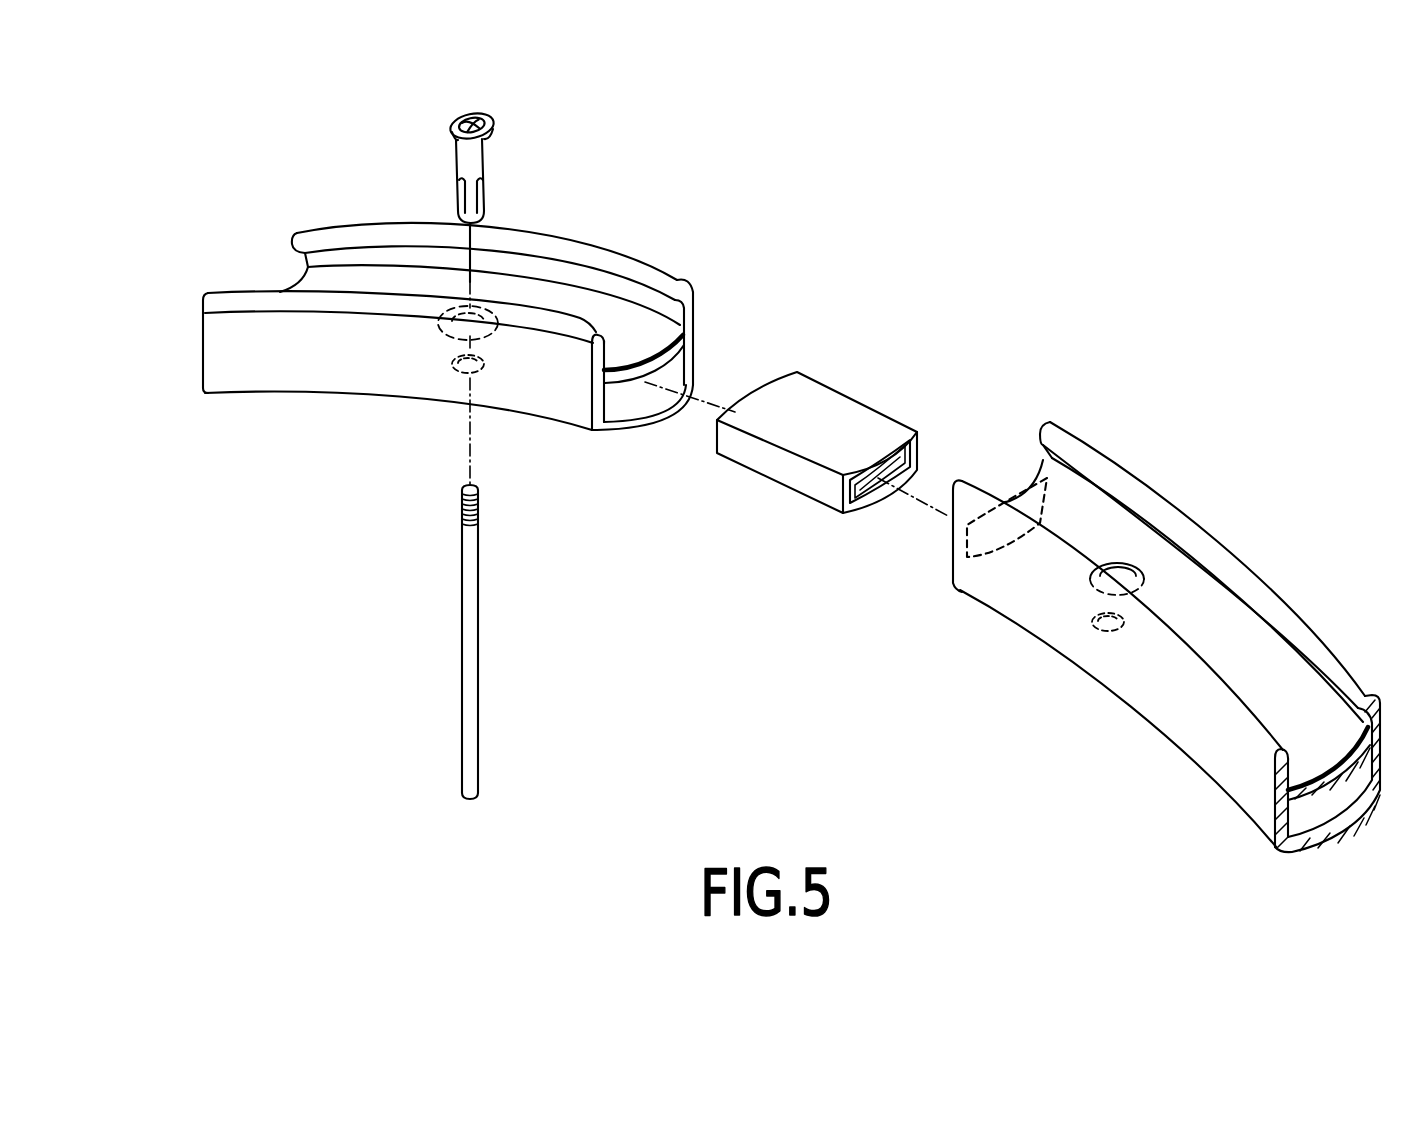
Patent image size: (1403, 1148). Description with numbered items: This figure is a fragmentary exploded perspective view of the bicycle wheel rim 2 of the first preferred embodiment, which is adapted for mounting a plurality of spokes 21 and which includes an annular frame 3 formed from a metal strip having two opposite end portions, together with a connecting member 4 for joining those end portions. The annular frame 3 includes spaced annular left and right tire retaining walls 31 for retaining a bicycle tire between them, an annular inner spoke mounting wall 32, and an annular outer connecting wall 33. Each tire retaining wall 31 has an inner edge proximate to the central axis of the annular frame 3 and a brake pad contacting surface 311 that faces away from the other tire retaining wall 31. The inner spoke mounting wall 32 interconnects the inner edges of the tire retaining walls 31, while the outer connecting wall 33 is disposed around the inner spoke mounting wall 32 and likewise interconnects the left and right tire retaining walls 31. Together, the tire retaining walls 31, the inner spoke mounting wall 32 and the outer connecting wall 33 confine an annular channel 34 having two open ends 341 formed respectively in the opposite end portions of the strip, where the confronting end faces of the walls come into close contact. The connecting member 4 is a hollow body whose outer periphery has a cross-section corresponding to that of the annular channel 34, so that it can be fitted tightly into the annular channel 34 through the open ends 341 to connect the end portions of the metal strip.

The bicycle wheel rim 2 is at (836, 266).
The spoke 21 is at (467, 603).
The annular frame 3 is at (577, 244).
The tire retaining wall 31 is at (697, 350).
The brake pad contacting surface 311 is at (390, 377).
The inner spoke mounting wall 32 is at (638, 422).
The outer connecting wall 33 is at (565, 305).
The annular channel 34 is at (1323, 807).
The open end 341 is at (648, 382).
The connecting member 4 is at (847, 430).